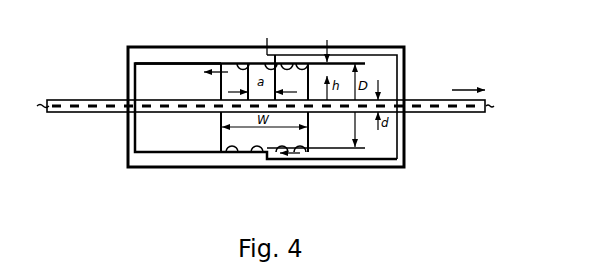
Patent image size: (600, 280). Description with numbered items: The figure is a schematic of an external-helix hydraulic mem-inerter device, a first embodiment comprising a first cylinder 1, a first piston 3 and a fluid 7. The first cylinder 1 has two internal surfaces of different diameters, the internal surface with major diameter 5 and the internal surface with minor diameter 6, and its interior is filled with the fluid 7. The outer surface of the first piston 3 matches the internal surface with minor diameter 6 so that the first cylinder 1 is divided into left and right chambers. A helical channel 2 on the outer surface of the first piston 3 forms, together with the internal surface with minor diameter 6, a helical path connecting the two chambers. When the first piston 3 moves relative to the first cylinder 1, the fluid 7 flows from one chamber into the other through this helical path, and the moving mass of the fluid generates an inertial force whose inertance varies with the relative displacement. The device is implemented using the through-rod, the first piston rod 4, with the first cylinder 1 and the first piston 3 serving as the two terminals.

The first cylinder 1 is at (151, 167).
The helical channel 2 is at (257, 143).
The first piston 3 is at (297, 130).
The first piston rod 4 is at (432, 112).
The internal surface with major diameter 5 is at (362, 55).
The internal surface with minor diameter 6 is at (190, 63).
The fluid 7 is at (148, 90).